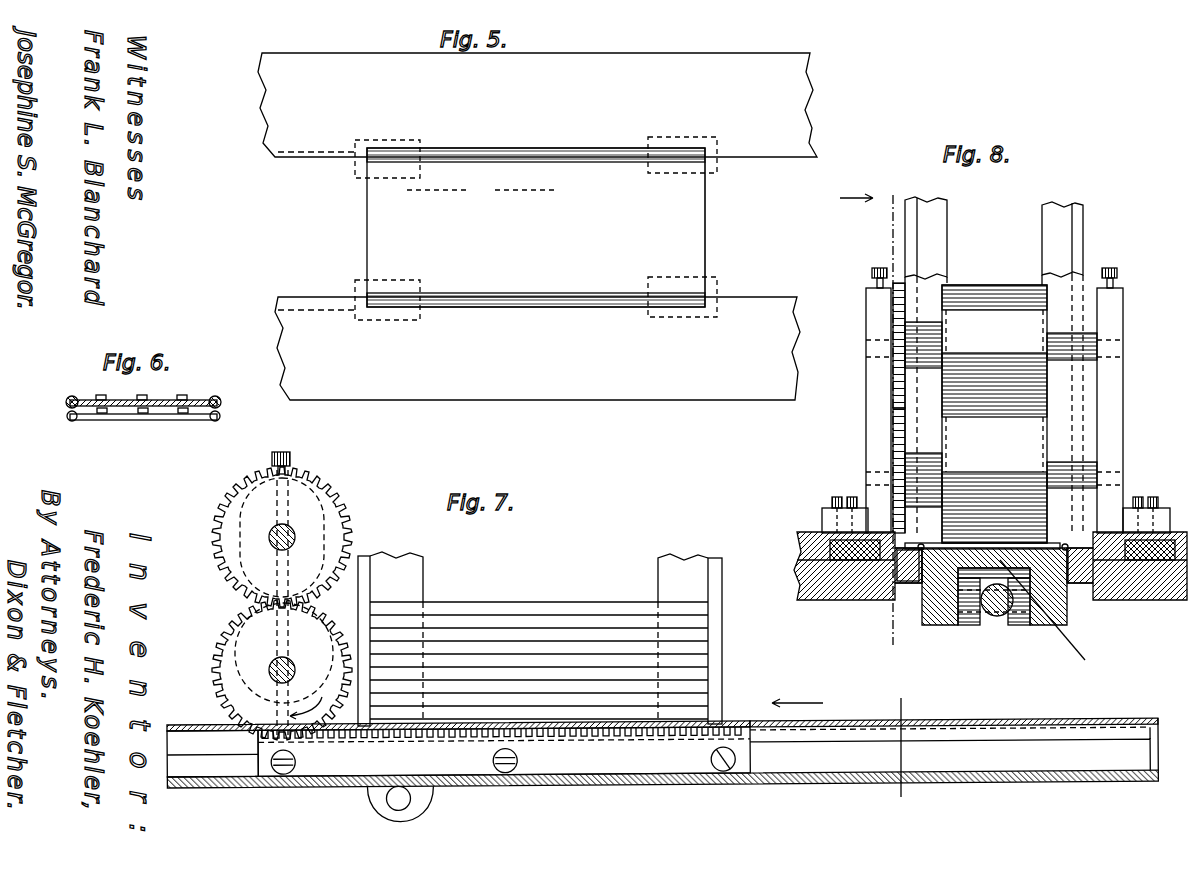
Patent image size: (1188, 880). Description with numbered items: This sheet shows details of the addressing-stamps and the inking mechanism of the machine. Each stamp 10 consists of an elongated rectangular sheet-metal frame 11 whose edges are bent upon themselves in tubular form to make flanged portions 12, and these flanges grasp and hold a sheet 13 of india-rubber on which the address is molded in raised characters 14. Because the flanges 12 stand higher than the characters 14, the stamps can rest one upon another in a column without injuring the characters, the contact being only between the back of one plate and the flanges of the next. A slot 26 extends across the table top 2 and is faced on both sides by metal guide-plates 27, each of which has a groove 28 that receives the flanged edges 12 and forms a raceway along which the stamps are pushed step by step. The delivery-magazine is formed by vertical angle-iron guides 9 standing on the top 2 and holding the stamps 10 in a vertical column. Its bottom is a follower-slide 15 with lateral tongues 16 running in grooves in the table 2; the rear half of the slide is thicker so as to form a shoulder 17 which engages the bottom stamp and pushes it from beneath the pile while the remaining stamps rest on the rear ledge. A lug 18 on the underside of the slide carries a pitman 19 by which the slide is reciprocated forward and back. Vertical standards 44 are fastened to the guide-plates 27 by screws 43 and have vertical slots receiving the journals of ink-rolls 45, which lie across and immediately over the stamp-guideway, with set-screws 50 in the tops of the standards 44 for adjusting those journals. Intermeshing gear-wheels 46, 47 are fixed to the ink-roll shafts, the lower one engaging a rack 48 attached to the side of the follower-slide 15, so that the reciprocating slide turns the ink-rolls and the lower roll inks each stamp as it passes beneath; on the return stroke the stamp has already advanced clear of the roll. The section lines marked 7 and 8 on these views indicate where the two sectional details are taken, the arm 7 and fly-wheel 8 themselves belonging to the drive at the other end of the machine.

In FIG. 8, the flat top 2 is at (797, 538).
In FIG. 8, the arm 7 is at (867, 426).
In FIG. 7, the fly-wheel 8 is at (836, 751).
In FIG. 7, the vertical angle-iron guides 9 is at (405, 578).
In FIG. 8, the vertical angle-iron guides 9 is at (1042, 231).
In FIG. 5, the addressing-stamps 10 is at (716, 227).
In FIG. 6, the addressing-stamps 10 is at (143, 412).
In FIG. 7, the addressing-stamps 10 is at (525, 622).
In FIG. 6, the sheet-metal frame 11 is at (195, 421).
In FIG. 5, the flanged portions 12 is at (558, 150).
In FIG. 6, the flanged portions 12 is at (66, 413).
In FIG. 8, the flanged portions 12 is at (924, 543).
In FIG. 5, the sheet 13 is at (536, 227).
In FIG. 6, the sheet 13 is at (202, 400).
In FIG. 5, the characters 14 is at (527, 195).
In FIG. 6, the characters 14 is at (122, 396).
In FIG. 7, the follower-slide 15 is at (1075, 753).
In FIG. 8, the follower-slide 15 is at (1023, 587).
In FIG. 8, the lateral tongues 16 is at (902, 590).
In FIG. 7, the shoulder 17 is at (722, 741).
In FIG. 8, the shoulder 17 is at (1050, 618).
In FIG. 7, the lug 18 is at (422, 808).
In FIG. 8, the lug 18 is at (958, 627).
In FIG. 8, the pitman 19 is at (1000, 618).
In FIG. 5, the slot 26 is at (316, 231).
In FIG. 5, the guide-plates 27 is at (537, 226).
In FIG. 8, the groove 28 is at (1002, 538).
In FIG. 8, the screws 43 is at (838, 497).
In FIG. 7, the vertical standards 44 is at (250, 604).
In FIG. 8, the vertical standards 44 is at (866, 400).
In FIG. 8, the ink-rolls 45 is at (1047, 396).
In FIG. 7, the gear-wheel 46 is at (254, 482).
In FIG. 8, the gear-wheel 46 is at (893, 333).
In FIG. 7, the gear-wheel 47 is at (222, 655).
In FIG. 8, the gear-wheel 47 is at (893, 448).
In FIG. 7, the rack 48 is at (332, 748).
In FIG. 8, the rack 48 is at (905, 565).
In FIG. 7, the set-screws 50 is at (289, 452).
In FIG. 8, the set-screws 50 is at (875, 268).